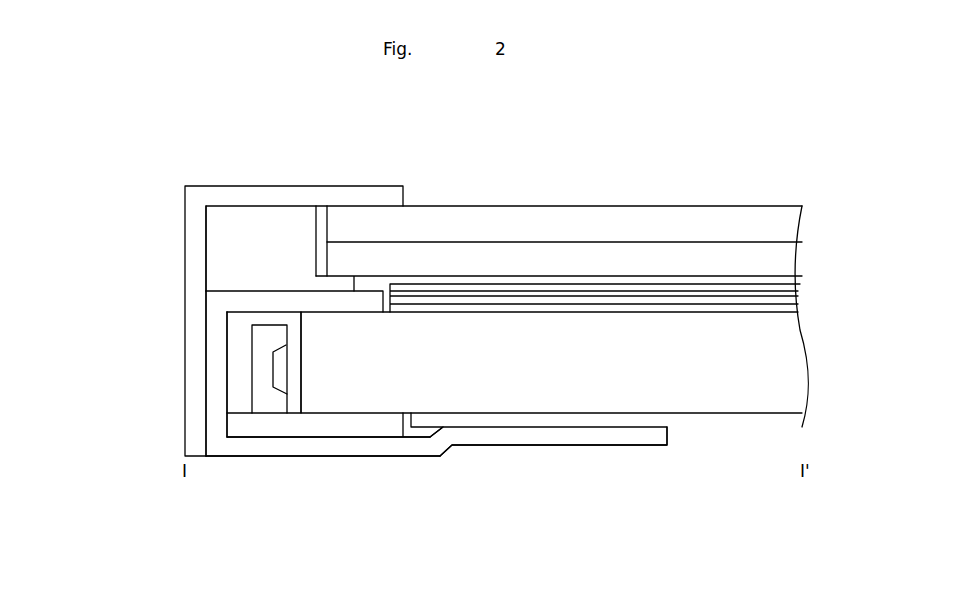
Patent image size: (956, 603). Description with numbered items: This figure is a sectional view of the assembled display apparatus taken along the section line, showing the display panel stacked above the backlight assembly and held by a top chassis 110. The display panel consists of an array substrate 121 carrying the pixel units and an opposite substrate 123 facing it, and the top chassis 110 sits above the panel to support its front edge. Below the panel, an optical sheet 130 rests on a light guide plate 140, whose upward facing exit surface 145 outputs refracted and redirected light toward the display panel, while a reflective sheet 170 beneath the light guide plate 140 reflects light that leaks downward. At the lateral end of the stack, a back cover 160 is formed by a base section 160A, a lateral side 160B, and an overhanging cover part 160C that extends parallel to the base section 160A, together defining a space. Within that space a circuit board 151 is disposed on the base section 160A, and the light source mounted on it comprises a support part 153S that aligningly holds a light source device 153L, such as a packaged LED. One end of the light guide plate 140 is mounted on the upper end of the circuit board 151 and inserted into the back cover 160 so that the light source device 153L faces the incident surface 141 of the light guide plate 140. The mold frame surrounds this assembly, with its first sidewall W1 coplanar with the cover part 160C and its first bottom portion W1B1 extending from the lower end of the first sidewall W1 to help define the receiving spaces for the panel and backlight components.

The top chassis 110 is at (253, 177).
The first sidewall W1 is at (230, 238).
The first bottom portion W1B1 is at (336, 279).
The opposite substrate 123 is at (782, 223).
The array substrate 121 is at (782, 261).
The optical sheet 130 is at (802, 283).
The light guide plate 140 is at (782, 370).
The exit surface 145 is at (496, 315).
The circuit board 151 is at (377, 428).
The light source device 153L is at (280, 385).
The support part 153S is at (265, 403).
The incident surface 141 is at (305, 373).
The reflective sheet 170 is at (560, 428).
The back cover 160 is at (85, 273).
The base section 160A is at (235, 450).
The lateral side 160B is at (218, 367).
The cover part 160C is at (260, 297).